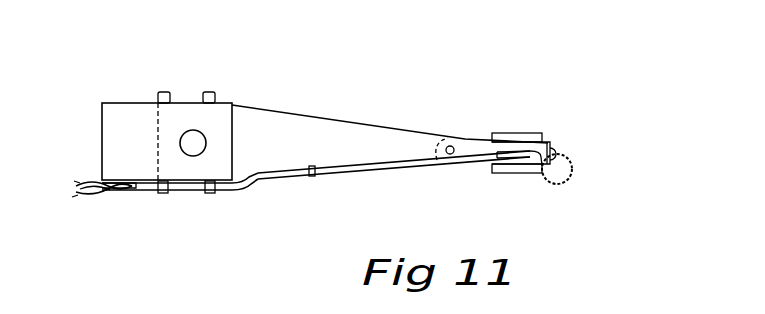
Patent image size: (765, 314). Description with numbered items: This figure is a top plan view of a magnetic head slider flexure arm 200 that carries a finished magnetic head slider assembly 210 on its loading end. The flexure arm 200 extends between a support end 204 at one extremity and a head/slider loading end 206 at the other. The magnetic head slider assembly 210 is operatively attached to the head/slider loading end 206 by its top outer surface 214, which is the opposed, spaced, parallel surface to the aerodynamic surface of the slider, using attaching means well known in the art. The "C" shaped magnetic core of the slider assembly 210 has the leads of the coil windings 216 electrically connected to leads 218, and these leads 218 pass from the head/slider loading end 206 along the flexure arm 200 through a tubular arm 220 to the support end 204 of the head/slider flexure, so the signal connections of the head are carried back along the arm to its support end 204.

The magnetic head slider flexure arm 200 is at (161, 78).
The support end 204 is at (180, 170).
The head/slider loading end 206 is at (440, 145).
The magnetic head slider assembly 210 is at (570, 122).
The top outer surface 214 is at (505, 174).
The leads of the coil windings 216 is at (563, 153).
The leads 218 is at (92, 194).
The tubular arm 220 is at (350, 172).